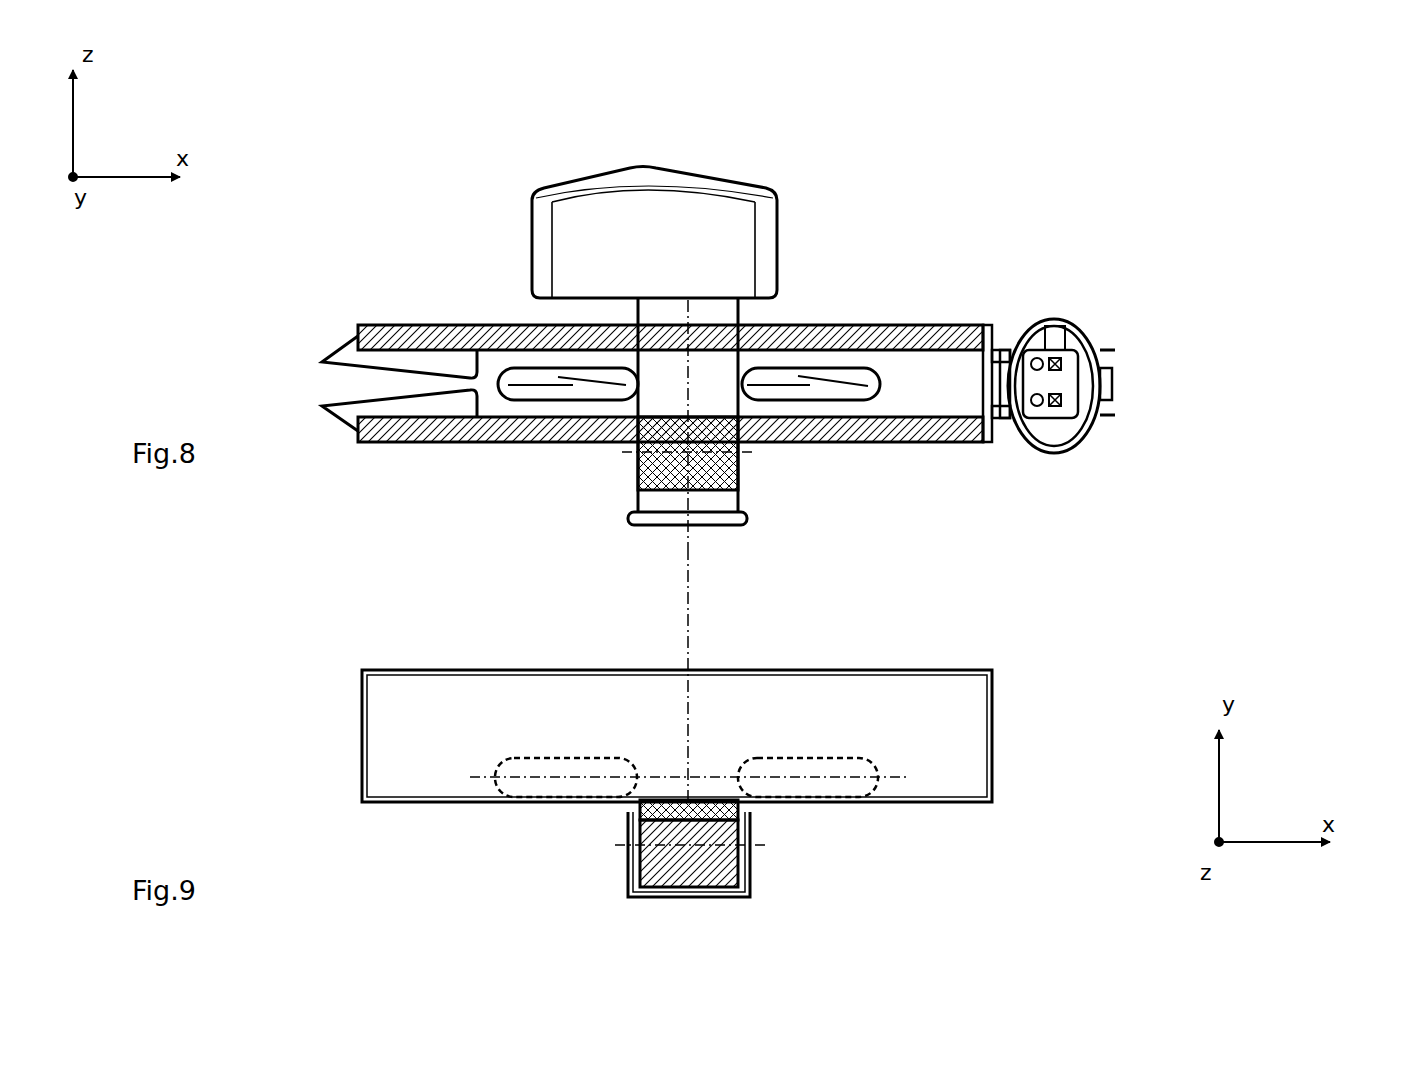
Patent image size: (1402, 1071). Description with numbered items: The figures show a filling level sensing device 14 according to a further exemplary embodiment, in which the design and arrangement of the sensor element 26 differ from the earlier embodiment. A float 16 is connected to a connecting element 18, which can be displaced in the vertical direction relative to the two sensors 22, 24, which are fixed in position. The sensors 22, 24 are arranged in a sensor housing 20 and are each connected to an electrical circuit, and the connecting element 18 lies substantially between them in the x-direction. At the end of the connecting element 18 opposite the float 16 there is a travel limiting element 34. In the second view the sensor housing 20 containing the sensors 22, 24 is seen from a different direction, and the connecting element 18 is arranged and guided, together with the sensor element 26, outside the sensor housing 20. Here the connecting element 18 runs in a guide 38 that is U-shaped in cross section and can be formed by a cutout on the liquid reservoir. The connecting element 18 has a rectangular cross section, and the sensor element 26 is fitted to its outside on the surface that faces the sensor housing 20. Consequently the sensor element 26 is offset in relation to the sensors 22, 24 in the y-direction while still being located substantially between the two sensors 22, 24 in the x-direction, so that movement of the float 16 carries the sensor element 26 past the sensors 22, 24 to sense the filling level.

In FIG. 8, the filling level sensing device 14 is at (1064, 535).
In FIG. 9, the filling level sensing device 14 is at (1016, 838).
In FIG. 8, the float 16 is at (737, 200).
In FIG. 8, the connecting element 18 is at (722, 313).
In FIG. 9, the connecting element 18 is at (718, 861).
In FIG. 8, the sensor housing 20 is at (975, 328).
In FIG. 9, the sensor housing 20 is at (382, 679).
In FIG. 8, the sensor 22 is at (540, 401).
In FIG. 9, the sensor 22 is at (535, 779).
In FIG. 8, the sensor 24 is at (873, 396).
In FIG. 9, the sensor 24 is at (850, 784).
In FIG. 8, the sensor element 26 is at (705, 458).
In FIG. 9, the sensor element 26 is at (664, 814).
In FIG. 8, the travel limiting element 34 is at (742, 516).
In FIG. 9, the guide 38 is at (626, 891).